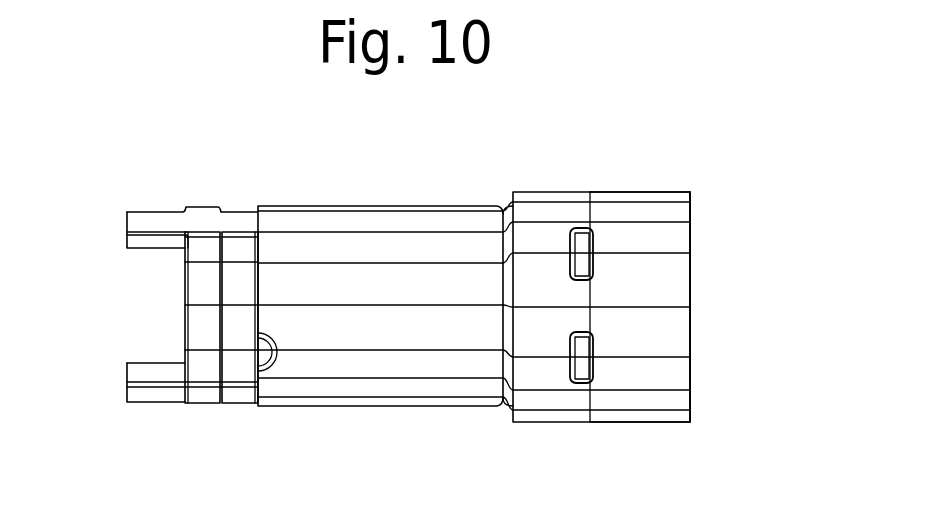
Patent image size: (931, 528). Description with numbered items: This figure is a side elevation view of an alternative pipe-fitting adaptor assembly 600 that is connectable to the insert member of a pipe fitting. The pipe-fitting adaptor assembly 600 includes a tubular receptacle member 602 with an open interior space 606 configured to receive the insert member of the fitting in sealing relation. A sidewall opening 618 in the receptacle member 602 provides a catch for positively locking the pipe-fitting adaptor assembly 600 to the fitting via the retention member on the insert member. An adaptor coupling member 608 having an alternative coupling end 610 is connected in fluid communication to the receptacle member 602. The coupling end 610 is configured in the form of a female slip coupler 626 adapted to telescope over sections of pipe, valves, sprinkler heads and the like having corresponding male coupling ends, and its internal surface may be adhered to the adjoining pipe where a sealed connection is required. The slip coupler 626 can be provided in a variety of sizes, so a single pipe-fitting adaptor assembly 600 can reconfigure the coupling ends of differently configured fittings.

The pipe-fitting adaptor assembly 600 is at (296, 159).
The tubular receptacle member 602 is at (345, 220).
The open interior space 606 is at (249, 264).
The adaptor coupling member 608 is at (558, 190).
The coupling end 610 is at (658, 292).
The sidewall opening 618 is at (222, 358).
The female slip coupler 626 is at (692, 348).